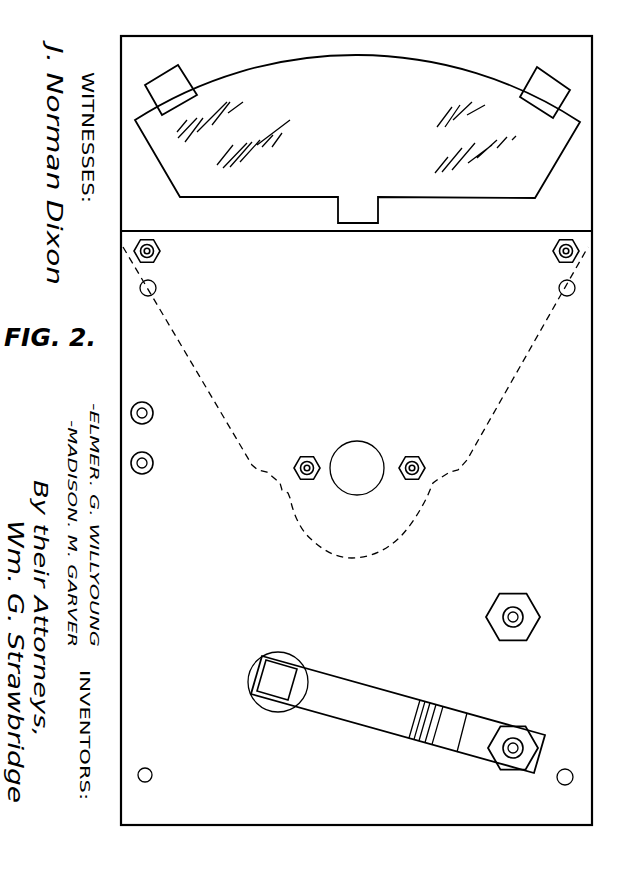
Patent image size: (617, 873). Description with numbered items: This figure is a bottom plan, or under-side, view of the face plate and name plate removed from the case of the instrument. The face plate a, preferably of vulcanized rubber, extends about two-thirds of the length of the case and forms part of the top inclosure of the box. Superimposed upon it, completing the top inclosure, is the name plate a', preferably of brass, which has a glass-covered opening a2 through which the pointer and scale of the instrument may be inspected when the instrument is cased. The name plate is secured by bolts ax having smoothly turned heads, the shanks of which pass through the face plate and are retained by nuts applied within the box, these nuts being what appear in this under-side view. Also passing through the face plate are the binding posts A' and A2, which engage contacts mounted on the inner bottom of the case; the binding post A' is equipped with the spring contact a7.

The face plate a is at (356, 430).
The name plate a' is at (357, 139).
The glass-covered opening a2 is at (346, 137).
The bolts ax is at (160, 253).
The binding post A2 is at (513, 607).
The binding post A' is at (513, 733).
The spring contact a7 is at (396, 712).